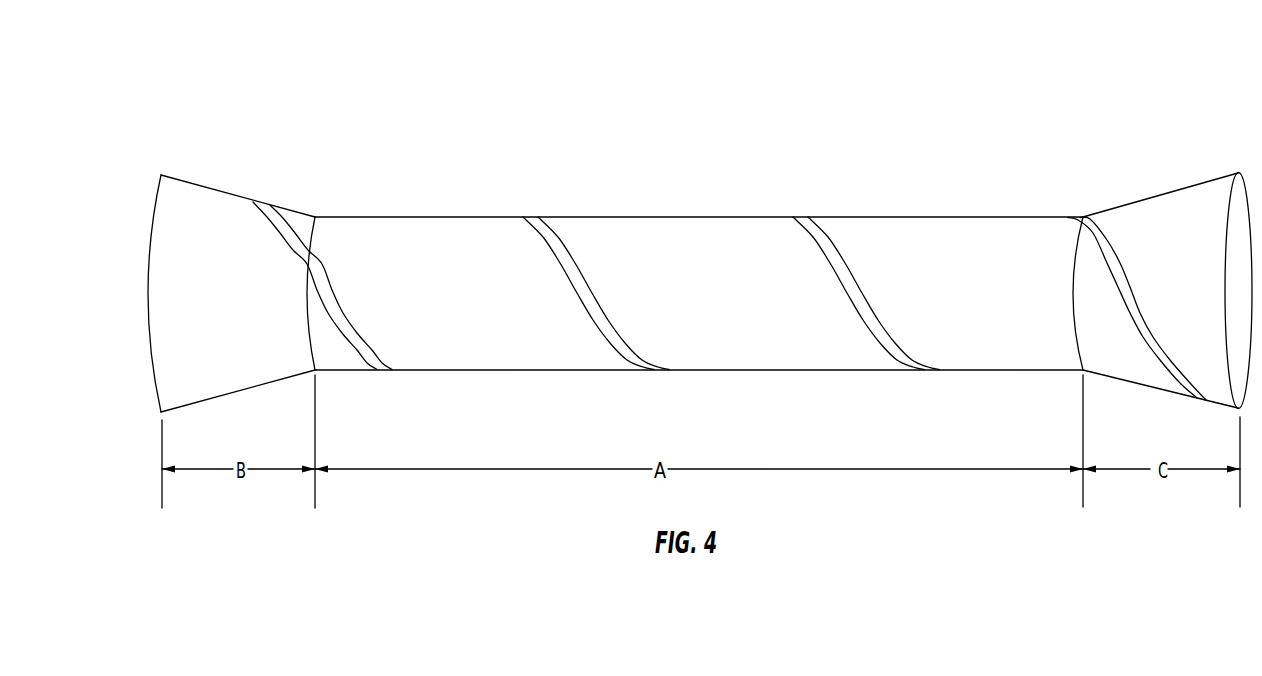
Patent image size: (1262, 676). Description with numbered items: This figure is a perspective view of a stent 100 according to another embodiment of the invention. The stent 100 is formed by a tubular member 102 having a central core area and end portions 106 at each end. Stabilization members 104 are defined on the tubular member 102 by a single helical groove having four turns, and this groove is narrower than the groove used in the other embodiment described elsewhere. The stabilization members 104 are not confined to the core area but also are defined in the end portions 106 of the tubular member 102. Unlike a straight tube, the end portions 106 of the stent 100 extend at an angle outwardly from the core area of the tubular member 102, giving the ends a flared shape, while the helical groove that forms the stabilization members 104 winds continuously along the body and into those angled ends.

The stent 100 is at (700, 236).
The tubular member 102 is at (389, 210).
The stabilization members 104 is at (548, 227).
The end portions 106 is at (237, 193).